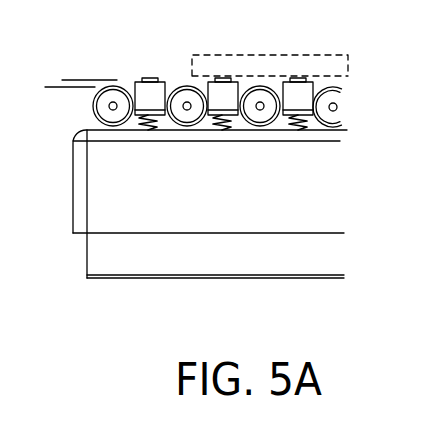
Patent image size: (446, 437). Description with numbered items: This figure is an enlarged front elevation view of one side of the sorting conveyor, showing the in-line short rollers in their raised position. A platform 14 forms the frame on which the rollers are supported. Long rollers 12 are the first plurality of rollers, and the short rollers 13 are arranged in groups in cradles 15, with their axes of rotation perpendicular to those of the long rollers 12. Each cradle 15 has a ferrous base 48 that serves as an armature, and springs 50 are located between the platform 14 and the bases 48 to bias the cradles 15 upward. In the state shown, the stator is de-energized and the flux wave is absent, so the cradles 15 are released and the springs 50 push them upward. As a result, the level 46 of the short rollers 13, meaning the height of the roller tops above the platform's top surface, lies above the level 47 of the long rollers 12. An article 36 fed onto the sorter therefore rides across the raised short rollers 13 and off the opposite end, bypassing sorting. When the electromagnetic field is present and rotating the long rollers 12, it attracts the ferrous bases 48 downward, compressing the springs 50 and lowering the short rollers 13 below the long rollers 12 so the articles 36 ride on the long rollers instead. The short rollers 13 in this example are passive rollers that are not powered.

The long rollers 12 is at (338, 118).
The short rollers 13 is at (150, 78).
The platform 14 is at (100, 211).
The cradles 15 is at (303, 103).
The articles 36 is at (282, 45).
The level of the short rollers 46 is at (77, 75).
The level of the long rollers 47 is at (68, 89).
The ferrous bases 48 is at (233, 112).
The springs 50 is at (149, 130).